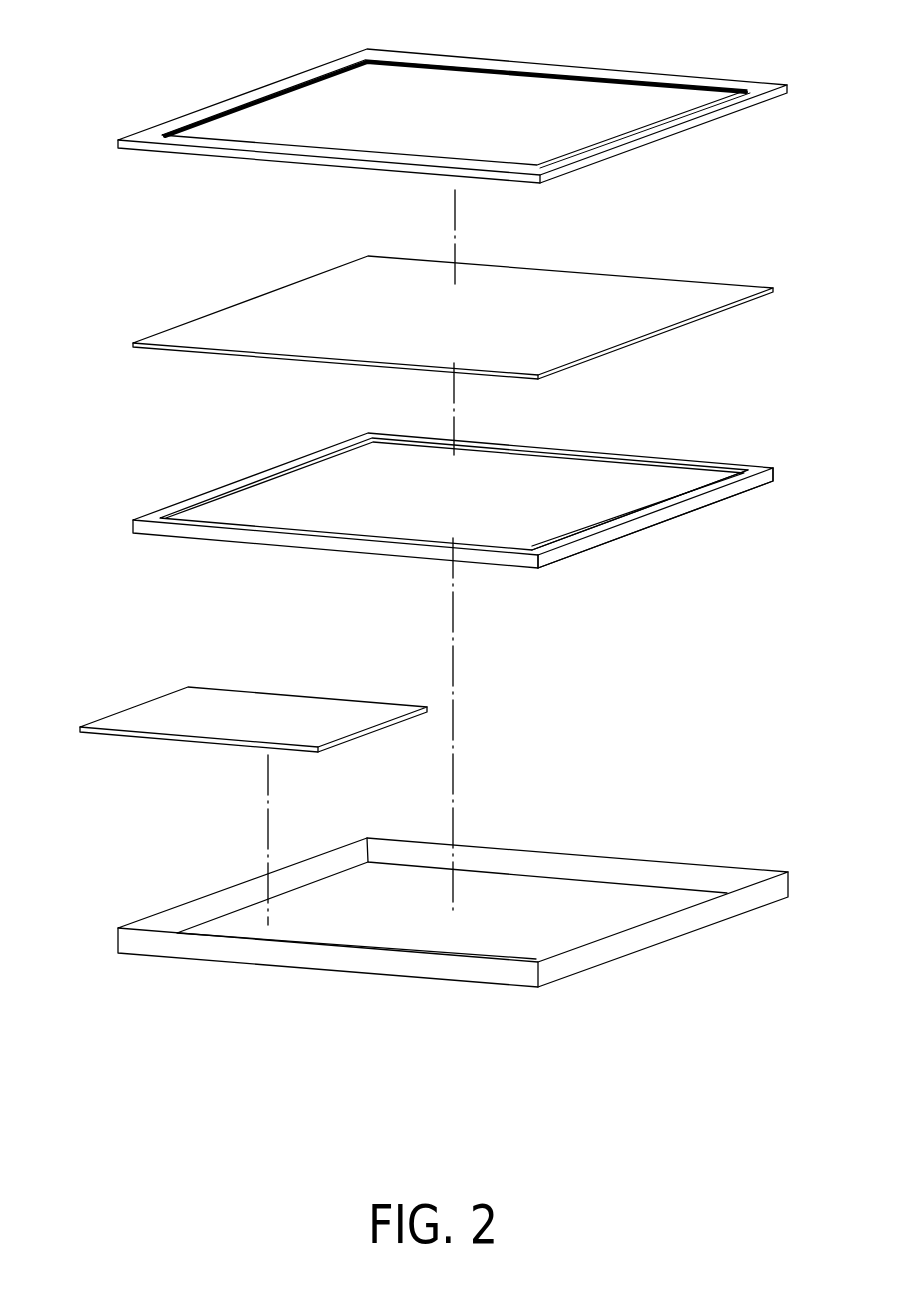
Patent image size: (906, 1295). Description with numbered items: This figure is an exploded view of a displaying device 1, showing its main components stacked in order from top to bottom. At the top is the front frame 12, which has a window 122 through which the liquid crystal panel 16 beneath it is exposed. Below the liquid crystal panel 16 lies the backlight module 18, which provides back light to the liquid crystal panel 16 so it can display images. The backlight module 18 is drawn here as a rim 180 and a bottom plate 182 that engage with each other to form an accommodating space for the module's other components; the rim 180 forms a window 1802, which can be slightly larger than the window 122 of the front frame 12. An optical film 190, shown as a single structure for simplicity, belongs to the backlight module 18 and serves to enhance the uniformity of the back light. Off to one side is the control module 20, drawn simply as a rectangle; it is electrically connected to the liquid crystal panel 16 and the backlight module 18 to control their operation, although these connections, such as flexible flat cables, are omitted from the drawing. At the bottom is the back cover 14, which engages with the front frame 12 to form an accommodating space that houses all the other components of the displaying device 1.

The displaying device 1 is at (52, 40).
The front frame 12 is at (703, 80).
The window 122 is at (563, 85).
The back cover 14 is at (663, 872).
The liquid crystal panel 16 is at (652, 290).
The backlight module 18 is at (471, 488).
The rim 180 is at (735, 462).
The window 1802 is at (587, 455).
The bottom plate 182 is at (577, 553).
The optical film 190 is at (638, 500).
The control module 20 is at (160, 710).